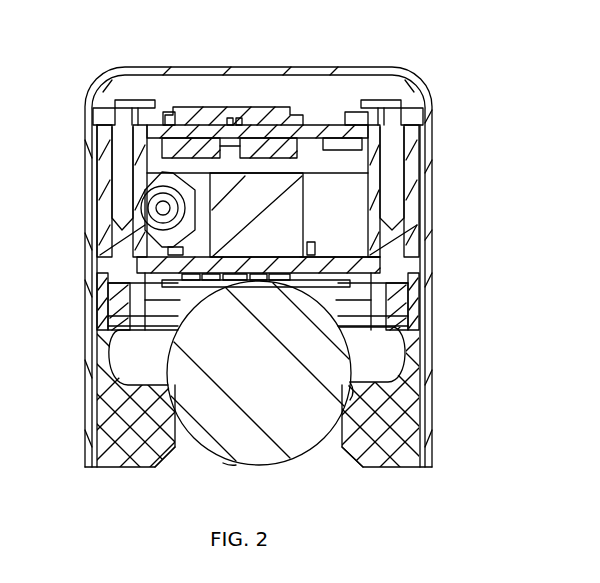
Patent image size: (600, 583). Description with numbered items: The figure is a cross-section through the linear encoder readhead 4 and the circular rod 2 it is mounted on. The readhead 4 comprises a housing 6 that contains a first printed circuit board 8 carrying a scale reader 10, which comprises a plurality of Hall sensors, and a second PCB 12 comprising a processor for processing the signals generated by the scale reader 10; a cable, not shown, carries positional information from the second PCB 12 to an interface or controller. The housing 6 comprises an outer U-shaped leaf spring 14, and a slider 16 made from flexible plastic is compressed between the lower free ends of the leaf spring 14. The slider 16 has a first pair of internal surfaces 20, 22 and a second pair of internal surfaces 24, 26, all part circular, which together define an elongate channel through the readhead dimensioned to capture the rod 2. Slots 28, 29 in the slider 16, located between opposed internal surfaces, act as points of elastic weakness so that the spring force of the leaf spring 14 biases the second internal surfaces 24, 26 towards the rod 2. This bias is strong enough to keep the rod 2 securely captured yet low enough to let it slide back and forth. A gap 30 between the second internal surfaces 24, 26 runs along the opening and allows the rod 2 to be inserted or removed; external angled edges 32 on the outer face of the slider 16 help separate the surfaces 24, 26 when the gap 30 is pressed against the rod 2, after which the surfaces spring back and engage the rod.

The rod 2 is at (282, 405).
The encoder readhead 4 is at (365, 70).
The housing 6 is at (432, 190).
The first printed circuit board 8 is at (347, 262).
The scale reader 10 is at (150, 255).
The second PCB 12 is at (367, 133).
The U-shaped leaf spring 14 is at (432, 342).
The slider 16 is at (400, 420).
The first internal surface 20 is at (150, 310).
The first internal surface 22 is at (340, 318).
The second internal surface 24 is at (143, 397).
The second internal surface 26 is at (350, 387).
The slot 28 is at (115, 358).
The slot 29 is at (393, 350).
The gap 30 is at (223, 463).
The external angled edges 32 is at (162, 466).